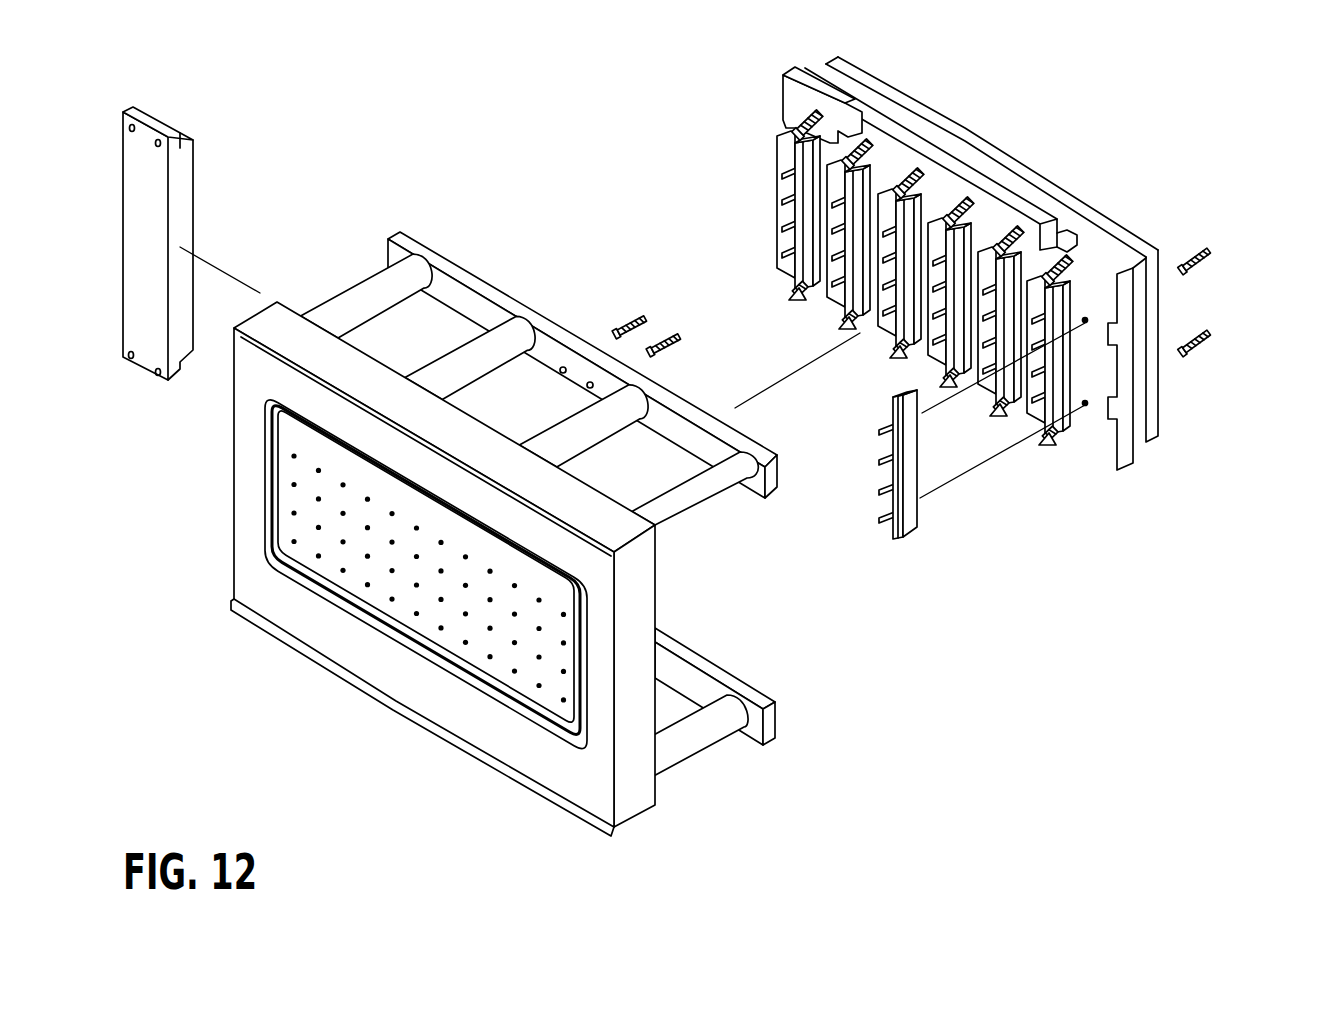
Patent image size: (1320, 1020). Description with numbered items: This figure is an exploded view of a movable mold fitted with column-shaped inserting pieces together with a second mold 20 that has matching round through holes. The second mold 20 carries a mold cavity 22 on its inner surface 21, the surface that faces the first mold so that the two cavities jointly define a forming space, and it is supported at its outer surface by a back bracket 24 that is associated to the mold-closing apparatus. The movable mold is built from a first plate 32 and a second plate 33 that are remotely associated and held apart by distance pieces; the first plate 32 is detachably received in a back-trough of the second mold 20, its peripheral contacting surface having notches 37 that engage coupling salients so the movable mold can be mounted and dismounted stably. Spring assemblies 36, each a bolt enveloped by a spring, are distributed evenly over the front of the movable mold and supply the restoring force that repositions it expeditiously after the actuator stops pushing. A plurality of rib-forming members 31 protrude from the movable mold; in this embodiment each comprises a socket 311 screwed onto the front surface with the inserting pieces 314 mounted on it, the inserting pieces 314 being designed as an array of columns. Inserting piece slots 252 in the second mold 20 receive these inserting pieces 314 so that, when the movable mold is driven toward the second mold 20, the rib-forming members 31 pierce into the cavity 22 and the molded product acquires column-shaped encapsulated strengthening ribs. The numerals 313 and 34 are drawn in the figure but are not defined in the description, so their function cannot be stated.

The second mold 20 is at (290, 322).
The inner surface 21 is at (245, 406).
The mold cavity 22 is at (268, 471).
The inserting piece slots 252 is at (293, 543).
The back bracket 24 is at (797, 452).
The rib-forming member 31 is at (987, 488).
The socket 311 is at (908, 505).
The inserting pieces 314 is at (885, 518).
The screws 313 is at (1215, 255).
The first plate 32 is at (800, 70).
The second plate 33 is at (852, 60).
The upper rail 34 is at (871, 98).
The notches 37 is at (904, 120).
The spring assemblies 36 is at (1080, 251).